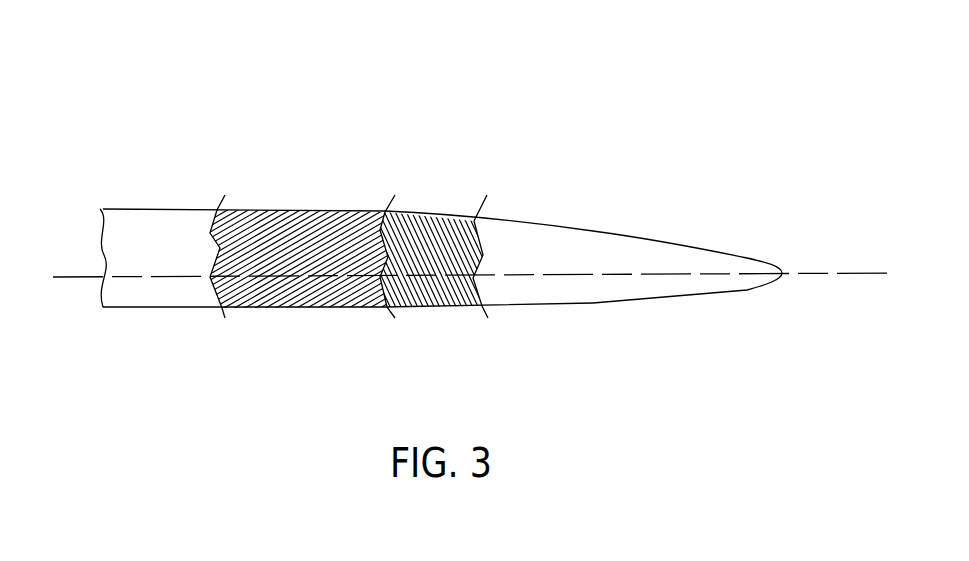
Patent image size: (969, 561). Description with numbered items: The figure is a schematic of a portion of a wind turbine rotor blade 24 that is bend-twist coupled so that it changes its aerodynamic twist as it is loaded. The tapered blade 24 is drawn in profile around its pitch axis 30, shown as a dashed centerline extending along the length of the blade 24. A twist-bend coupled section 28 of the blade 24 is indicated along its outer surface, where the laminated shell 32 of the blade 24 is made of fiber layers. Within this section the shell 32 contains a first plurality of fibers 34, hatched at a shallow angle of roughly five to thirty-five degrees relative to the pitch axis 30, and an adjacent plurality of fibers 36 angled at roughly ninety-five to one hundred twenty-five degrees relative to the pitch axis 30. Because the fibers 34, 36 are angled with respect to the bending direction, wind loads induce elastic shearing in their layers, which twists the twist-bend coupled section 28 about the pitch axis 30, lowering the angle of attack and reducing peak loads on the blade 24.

The blade 24 is at (713, 297).
The twist-bend coupled section 28 is at (386, 145).
The pitch axis 30 is at (80, 277).
The shell 32 is at (593, 303).
The fibers 34 is at (302, 190).
The fibers 36 is at (437, 195).